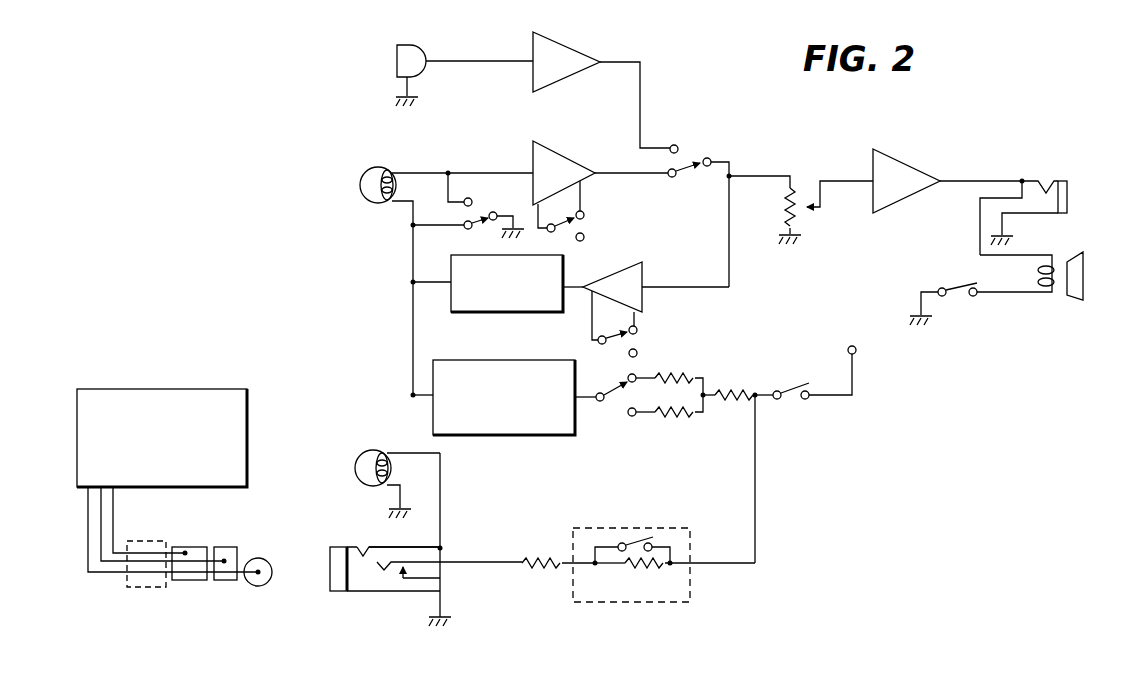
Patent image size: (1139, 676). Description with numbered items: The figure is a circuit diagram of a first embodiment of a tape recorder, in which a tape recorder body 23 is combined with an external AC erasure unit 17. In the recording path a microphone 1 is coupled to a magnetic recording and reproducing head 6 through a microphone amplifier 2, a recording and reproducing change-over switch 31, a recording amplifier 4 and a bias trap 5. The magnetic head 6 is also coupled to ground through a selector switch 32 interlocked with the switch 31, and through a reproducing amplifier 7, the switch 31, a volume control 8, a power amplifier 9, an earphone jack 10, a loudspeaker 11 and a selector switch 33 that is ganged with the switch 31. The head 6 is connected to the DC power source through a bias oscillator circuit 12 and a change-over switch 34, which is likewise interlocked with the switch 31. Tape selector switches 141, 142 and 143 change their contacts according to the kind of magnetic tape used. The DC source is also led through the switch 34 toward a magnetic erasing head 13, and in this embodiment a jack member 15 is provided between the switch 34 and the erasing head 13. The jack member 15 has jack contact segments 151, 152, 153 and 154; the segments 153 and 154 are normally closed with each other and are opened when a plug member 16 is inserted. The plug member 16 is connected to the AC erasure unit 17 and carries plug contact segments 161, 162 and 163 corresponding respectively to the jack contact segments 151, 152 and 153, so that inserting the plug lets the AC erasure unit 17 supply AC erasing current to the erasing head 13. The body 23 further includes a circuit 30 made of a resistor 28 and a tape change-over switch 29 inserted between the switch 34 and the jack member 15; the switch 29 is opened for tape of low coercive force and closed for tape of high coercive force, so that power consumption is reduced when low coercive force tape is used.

The microphone 1 is at (403, 50).
The microphone amplifier 2 is at (550, 58).
The tape recorder body 23 is at (722, 112).
The recording and reproducing change-over switch 31 is at (692, 153).
The reproducing amplifier 7 is at (568, 162).
The tape selector switch 141 is at (570, 228).
The selector switch 32 is at (465, 210).
The magnetic recording and reproducing head 6 is at (365, 213).
The bias trap 5 is at (468, 314).
The recording amplifier 4 is at (645, 275).
The tape selector switch 142 is at (622, 334).
The bias oscillator circuit 12 is at (533, 436).
The tape selector switch 143 is at (634, 400).
The change-over switch 34 is at (797, 401).
The volume control 8 is at (786, 215).
The power amplifier 9 is at (905, 180).
The earphone jack 10 is at (1053, 202).
The loudspeaker 11 is at (1085, 275).
The selector switch 33 is at (957, 300).
The AC erasure unit 17 is at (242, 382).
The plug contact segment 161 is at (185, 545).
The plug contact segment 162 is at (225, 545).
The plug contact segment 163 is at (260, 558).
The plug member 16 is at (152, 592).
The magnetic erasing head 13 is at (368, 452).
The jack member 15 is at (391, 580).
The jack contact segment 151 is at (336, 578).
The jack contact segment 152 is at (378, 545).
The jack contact segment 153 is at (400, 560).
The jack contact segment 154 is at (420, 577).
The circuit 30 is at (690, 585).
The tape change-over switch 29 is at (635, 531).
The resistor 28 is at (648, 578).